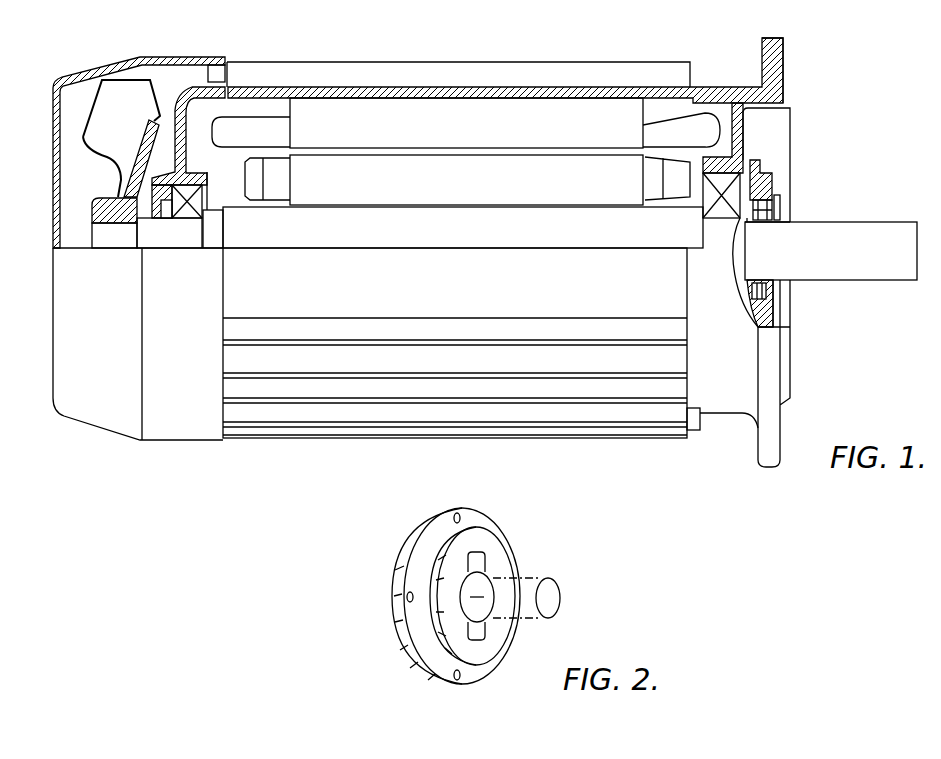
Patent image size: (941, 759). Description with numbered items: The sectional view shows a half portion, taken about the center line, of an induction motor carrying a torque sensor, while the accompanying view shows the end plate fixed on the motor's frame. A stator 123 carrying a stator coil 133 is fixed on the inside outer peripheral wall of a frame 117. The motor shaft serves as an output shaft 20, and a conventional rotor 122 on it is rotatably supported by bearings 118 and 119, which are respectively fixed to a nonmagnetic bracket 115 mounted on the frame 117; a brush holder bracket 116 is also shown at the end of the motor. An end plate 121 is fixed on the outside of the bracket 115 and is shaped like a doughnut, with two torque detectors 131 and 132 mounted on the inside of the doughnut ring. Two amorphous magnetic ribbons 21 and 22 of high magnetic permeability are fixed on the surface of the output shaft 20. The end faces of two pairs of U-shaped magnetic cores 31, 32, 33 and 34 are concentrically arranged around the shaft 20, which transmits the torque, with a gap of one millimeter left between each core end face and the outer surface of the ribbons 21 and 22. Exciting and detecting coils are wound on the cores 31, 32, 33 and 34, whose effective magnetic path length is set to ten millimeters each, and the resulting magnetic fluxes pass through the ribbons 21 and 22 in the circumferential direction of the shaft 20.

In FIG. 1, the output shaft 20 is at (880, 272).
In FIG. 2, the output shaft 20 is at (560, 598).
In FIG. 1, the amorphous magnetic ribbon 21 is at (782, 222).
In FIG. 1, the amorphous magnetic ribbon 22 is at (757, 221).
In FIG. 1, the U-shaped magnetic core 31 is at (782, 210).
In FIG. 1, the U-shaped magnetic core 32 is at (735, 252).
In FIG. 1, the U-shaped magnetic core 33 is at (783, 300).
In FIG. 1, the U-shaped magnetic core 34 is at (752, 296).
In FIG. 1, the nonmagnetic bracket 115 is at (786, 62).
In FIG. 1, the brush holder bracket 116 is at (186, 88).
In FIG. 1, the frame 117 is at (496, 87).
In FIG. 1, the bearing 118 is at (715, 218).
In FIG. 1, the bearing 119 is at (183, 225).
In FIG. 1, the end plate 121 is at (778, 181).
In FIG. 2, the end plate 121 is at (397, 648).
In FIG. 1, the rotor 122 is at (333, 163).
In FIG. 1, the stator 123 is at (412, 112).
In FIG. 1, the torque detector 131 is at (775, 203).
In FIG. 2, the torque detector 131 is at (487, 560).
In FIG. 1, the torque detector 132 is at (781, 314).
In FIG. 2, the torque detector 132 is at (487, 632).
In FIG. 1, the stator coil 133 is at (706, 115).